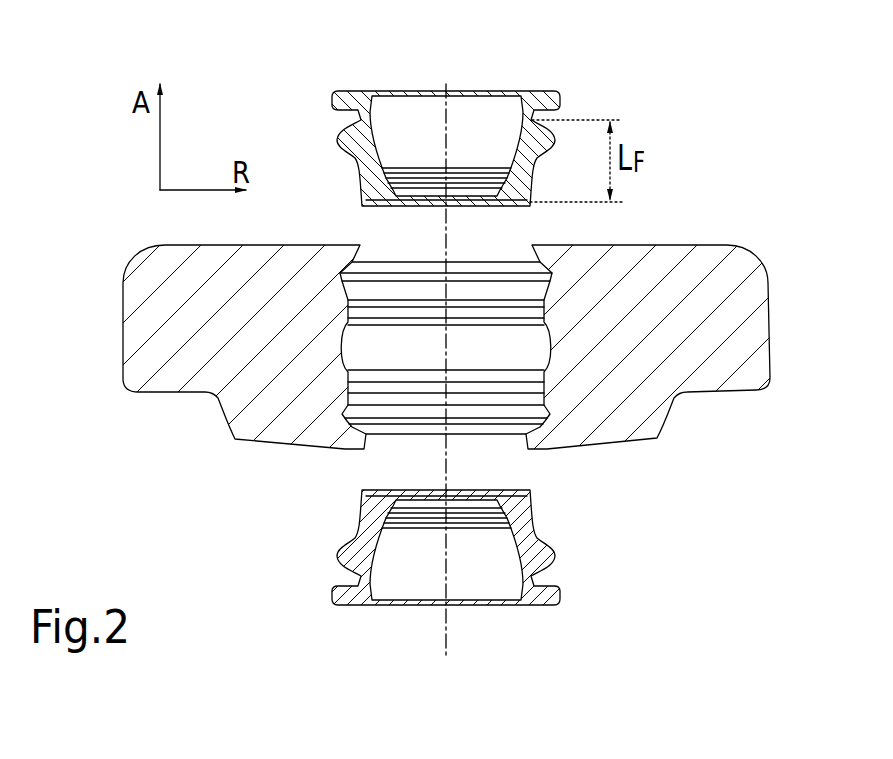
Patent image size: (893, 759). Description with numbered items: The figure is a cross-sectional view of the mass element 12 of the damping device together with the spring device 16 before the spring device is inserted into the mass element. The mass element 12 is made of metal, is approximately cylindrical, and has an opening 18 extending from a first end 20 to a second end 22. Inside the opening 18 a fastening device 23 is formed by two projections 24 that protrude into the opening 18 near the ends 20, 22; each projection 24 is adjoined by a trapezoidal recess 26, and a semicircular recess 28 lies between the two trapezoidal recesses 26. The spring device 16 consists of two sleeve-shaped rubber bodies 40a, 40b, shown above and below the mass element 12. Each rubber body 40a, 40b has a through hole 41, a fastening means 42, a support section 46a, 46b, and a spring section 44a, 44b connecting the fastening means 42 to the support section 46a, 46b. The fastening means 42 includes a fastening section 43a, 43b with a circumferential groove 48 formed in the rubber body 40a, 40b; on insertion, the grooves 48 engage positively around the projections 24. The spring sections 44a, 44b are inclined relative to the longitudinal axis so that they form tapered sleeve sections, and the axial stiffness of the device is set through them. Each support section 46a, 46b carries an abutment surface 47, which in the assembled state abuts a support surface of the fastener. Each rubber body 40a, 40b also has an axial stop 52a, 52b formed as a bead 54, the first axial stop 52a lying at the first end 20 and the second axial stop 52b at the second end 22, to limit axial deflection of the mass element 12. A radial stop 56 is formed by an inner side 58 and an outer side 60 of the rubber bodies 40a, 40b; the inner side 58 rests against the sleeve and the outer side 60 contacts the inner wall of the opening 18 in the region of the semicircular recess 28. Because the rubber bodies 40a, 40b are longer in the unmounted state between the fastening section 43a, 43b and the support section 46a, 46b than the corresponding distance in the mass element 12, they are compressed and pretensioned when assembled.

The mass element 12 is at (690, 264).
The spring device 16 is at (581, 107).
The opening 18 is at (372, 270).
The first end 20 is at (612, 244).
The second end 22 is at (608, 452).
The fastening device 23 is at (543, 240).
The projections 24 is at (343, 258).
The trapezoidal recess 26 is at (340, 287).
The semicircular recess 28 is at (341, 347).
The rubber body 40a is at (559, 86).
The rubber body 40b is at (568, 556).
The through hole 41 is at (398, 145).
The fastening means 42 is at (323, 101).
The fastening section 43a is at (525, 112).
The fastening section 43b is at (398, 592).
The spring section 44a is at (392, 174).
The spring section 44b is at (365, 528).
The support section 46a is at (383, 170).
The support section 46b is at (512, 511).
The abutment surface 47 is at (386, 194).
The circumferential groove 48 is at (360, 117).
The axial stop 52a is at (536, 98).
The axial stop 52b is at (532, 603).
The bead 54 is at (388, 175).
The radial stop 56 is at (468, 148).
The inner side 58 is at (494, 154).
The outer side 60 is at (350, 188).